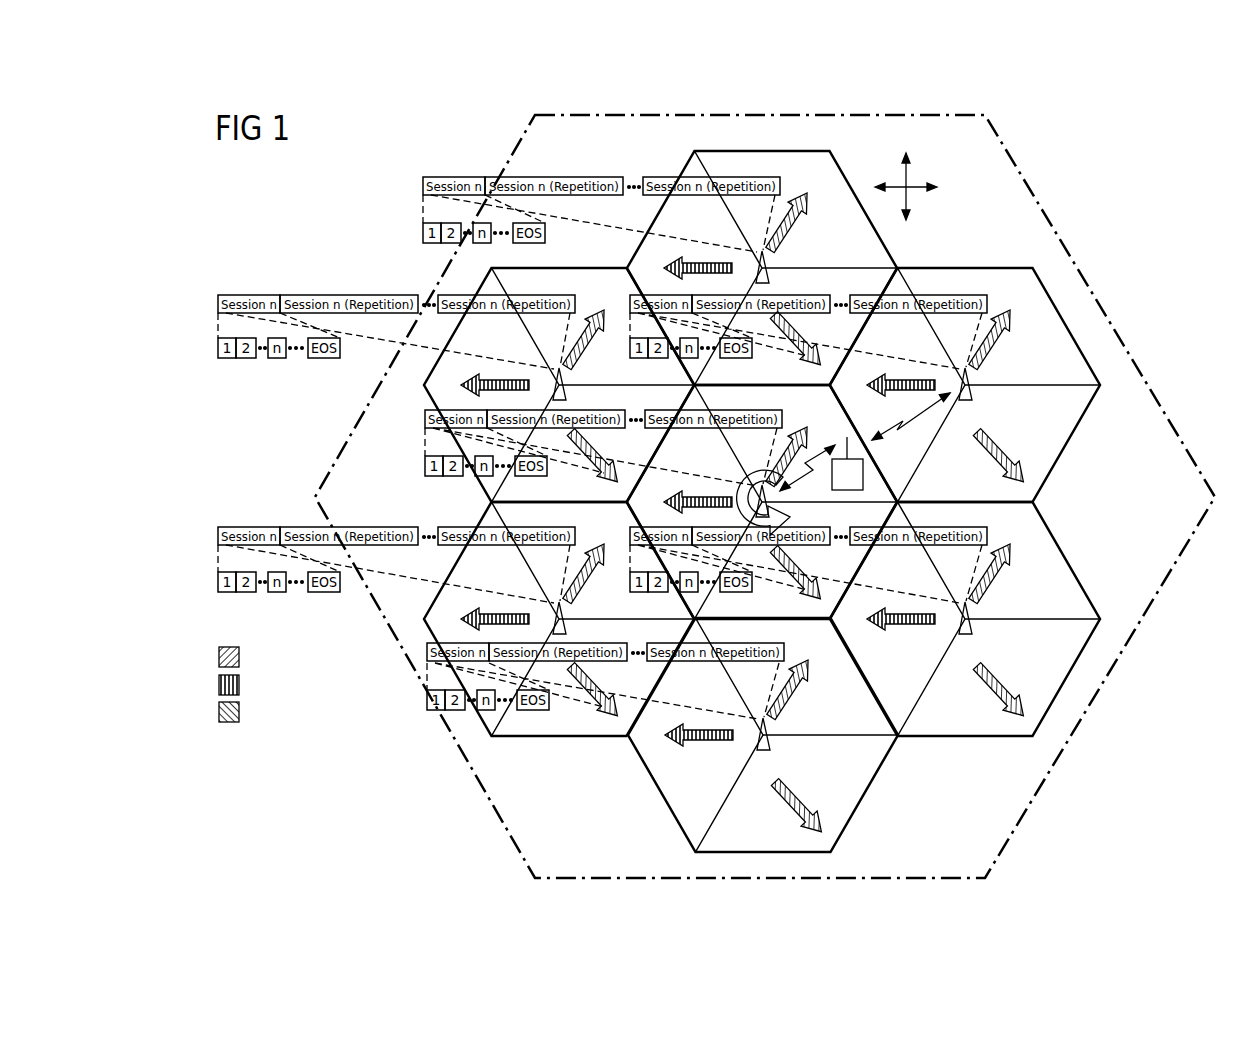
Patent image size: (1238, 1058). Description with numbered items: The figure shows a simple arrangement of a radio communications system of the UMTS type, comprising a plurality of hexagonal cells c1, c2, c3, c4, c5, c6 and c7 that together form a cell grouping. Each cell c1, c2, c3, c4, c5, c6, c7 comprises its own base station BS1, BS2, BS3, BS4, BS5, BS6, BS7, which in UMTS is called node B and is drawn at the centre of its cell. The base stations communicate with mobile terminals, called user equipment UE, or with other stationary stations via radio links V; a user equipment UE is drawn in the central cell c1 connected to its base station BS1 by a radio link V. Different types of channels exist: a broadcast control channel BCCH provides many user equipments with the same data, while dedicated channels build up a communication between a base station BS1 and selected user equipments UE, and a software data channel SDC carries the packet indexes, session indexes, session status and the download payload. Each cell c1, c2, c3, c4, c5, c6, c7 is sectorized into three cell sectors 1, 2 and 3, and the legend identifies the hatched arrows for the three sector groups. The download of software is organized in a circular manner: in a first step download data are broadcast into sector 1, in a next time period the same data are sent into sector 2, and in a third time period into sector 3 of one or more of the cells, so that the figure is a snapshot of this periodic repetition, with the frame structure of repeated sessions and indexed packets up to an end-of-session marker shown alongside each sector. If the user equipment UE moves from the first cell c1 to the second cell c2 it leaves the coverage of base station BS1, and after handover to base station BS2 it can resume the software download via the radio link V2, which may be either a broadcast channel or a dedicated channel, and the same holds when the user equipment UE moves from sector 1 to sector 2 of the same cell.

The UMTS radio communications system UMTS is at (765, 496).
The first cell c1 is at (762, 502).
The second cell c2 is at (965, 387).
The cell c3 is at (763, 735).
The cell c4 is at (559, 619).
The cell c5 is at (559, 385).
The cell c6 is at (762, 268).
The cell c7 is at (965, 619).
The base station BS1 is at (790, 517).
The base station BS2 is at (973, 397).
The base station BS3 is at (770, 746).
The base station BS4 is at (566, 614).
The base station BS5 is at (566, 380).
The base station BS6 is at (768, 262).
The base station BS7 is at (972, 634).
The user equipment UE is at (847, 463).
The radio link V is at (815, 446).
The radio link V2 is at (893, 440).
The software data channel SDC is at (913, 378).
The broadcast control channel BCCH is at (942, 189).
The first cell sector 1 is at (295, 657).
The second cell sector 2 is at (296, 684).
The third cell sector 3 is at (302, 711).